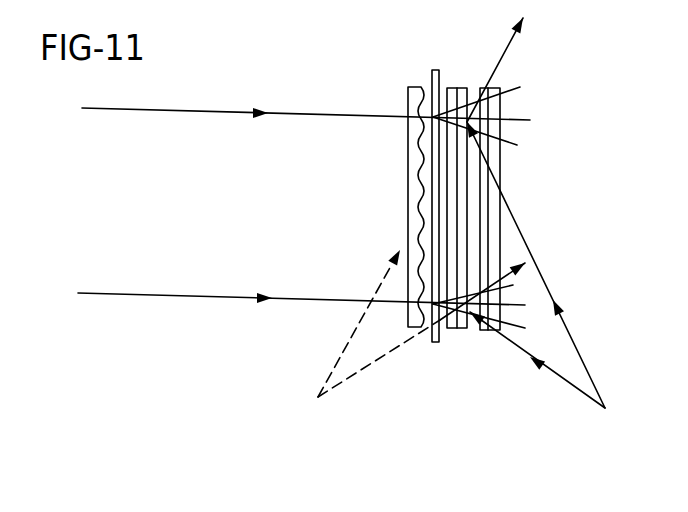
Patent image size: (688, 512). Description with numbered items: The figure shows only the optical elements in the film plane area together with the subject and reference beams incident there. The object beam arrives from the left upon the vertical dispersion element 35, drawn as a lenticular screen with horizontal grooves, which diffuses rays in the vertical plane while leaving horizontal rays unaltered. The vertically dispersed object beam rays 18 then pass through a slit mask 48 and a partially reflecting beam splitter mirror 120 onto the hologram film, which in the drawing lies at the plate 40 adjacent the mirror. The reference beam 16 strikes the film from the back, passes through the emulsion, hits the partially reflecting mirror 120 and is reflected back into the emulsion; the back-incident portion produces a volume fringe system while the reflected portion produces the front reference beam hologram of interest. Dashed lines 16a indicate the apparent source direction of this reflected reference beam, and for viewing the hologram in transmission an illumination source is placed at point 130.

The object beam rays 18 is at (170, 110).
The vertical dispersion element 35 is at (410, 90).
The slit mask 48 is at (435, 70).
The partially reflecting beam splitter mirror 120 is at (452, 88).
The transparent plate 40 is at (494, 105).
The reference beam 16 is at (570, 387).
The apparent source direction of the reflected reference beam 16a is at (388, 352).
The illumination source point 130 is at (318, 398).